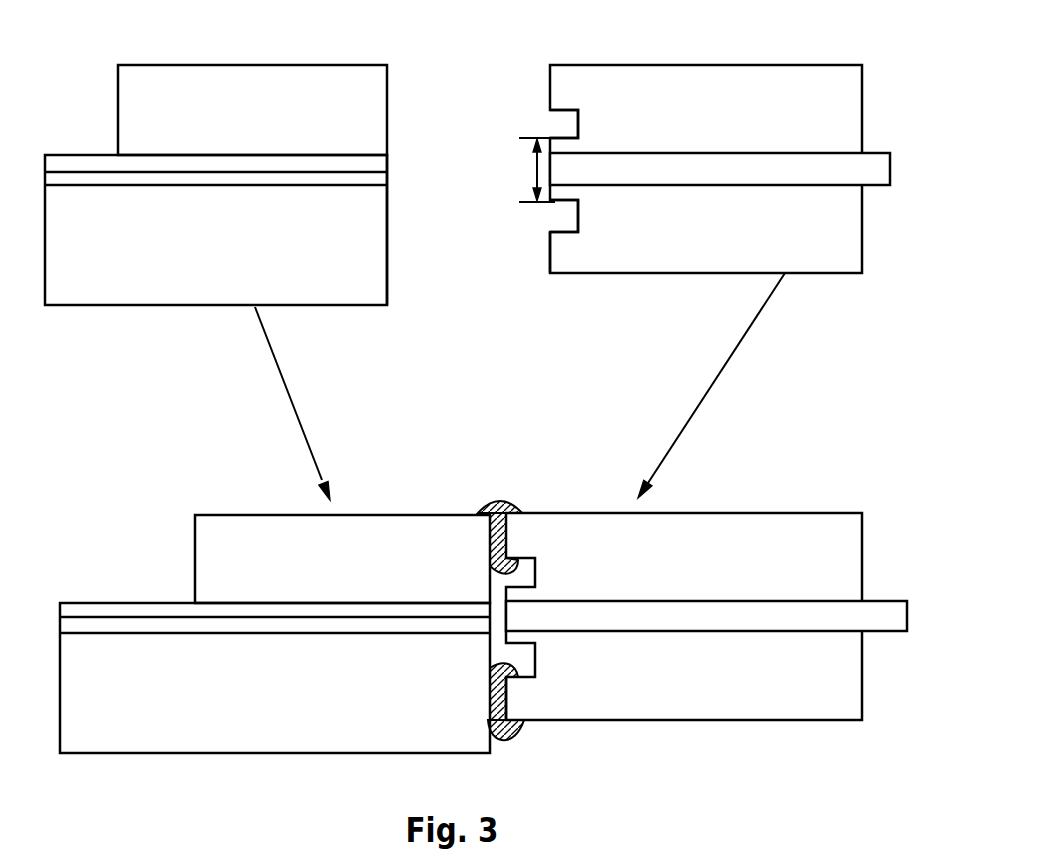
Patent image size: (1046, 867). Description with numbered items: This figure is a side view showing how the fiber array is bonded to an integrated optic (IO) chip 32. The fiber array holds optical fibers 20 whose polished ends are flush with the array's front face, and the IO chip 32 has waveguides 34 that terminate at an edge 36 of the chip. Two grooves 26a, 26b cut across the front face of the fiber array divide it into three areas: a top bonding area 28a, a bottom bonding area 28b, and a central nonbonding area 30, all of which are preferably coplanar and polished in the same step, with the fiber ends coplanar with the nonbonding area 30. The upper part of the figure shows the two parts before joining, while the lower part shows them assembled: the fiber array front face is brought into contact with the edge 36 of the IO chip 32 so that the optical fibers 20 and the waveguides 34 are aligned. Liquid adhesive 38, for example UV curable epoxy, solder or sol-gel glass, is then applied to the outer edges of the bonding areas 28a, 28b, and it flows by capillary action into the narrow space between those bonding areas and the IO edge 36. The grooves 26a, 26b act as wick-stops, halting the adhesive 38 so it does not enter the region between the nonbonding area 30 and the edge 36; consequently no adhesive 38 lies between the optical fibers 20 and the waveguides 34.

The optical fibers 20 is at (787, 170).
The groove 26a is at (563, 127).
The groove 26b is at (563, 213).
The top bonding area 28a is at (548, 92).
The bottom bonding area 28b is at (548, 250).
The nonbonding area 30 is at (537, 163).
The integrated optic chip 32 is at (207, 287).
The waveguides 34 is at (70, 172).
The edge of the IO chip 36 is at (388, 202).
The liquid adhesive 38 is at (500, 503).